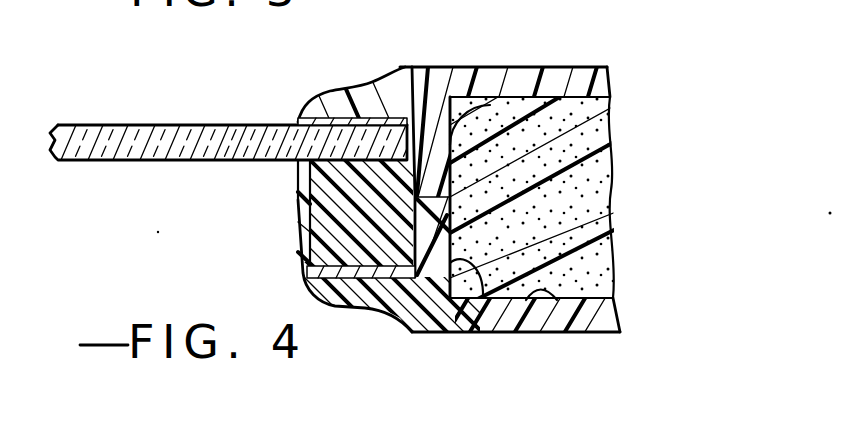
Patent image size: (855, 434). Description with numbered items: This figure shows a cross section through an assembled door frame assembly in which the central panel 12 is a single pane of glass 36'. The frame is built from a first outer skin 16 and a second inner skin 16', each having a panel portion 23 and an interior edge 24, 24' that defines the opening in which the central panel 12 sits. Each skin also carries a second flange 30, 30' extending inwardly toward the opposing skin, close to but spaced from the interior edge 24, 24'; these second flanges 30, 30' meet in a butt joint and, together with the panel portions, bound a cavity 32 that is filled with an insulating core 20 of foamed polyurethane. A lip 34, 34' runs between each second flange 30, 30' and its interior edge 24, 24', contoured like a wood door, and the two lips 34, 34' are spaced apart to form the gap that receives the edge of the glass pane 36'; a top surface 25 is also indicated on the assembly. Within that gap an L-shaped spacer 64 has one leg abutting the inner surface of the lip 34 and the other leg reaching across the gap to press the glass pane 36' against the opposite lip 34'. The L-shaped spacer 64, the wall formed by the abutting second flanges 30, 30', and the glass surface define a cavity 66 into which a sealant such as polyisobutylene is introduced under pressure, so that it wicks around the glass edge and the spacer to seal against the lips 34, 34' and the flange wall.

The central panel 12 is at (129, 167).
The single pane of glass 36' is at (232, 97).
The interior edge 24' is at (296, 92).
The lip 34' is at (338, 84).
The second inner skin 16' is at (507, 167).
The top surface 25 is at (545, 67).
The insulating core 20 is at (558, 118).
The second flange 30' is at (496, 89).
The second flange 30 is at (477, 323).
The cavity 32 is at (528, 300).
The first outer skin 16 is at (498, 245).
The panel portion 23 is at (602, 334).
The cavity 66 is at (328, 192).
The L-shaped spacer 64 is at (305, 226).
The interior edge 24 is at (306, 266).
The lip 34 is at (361, 335).